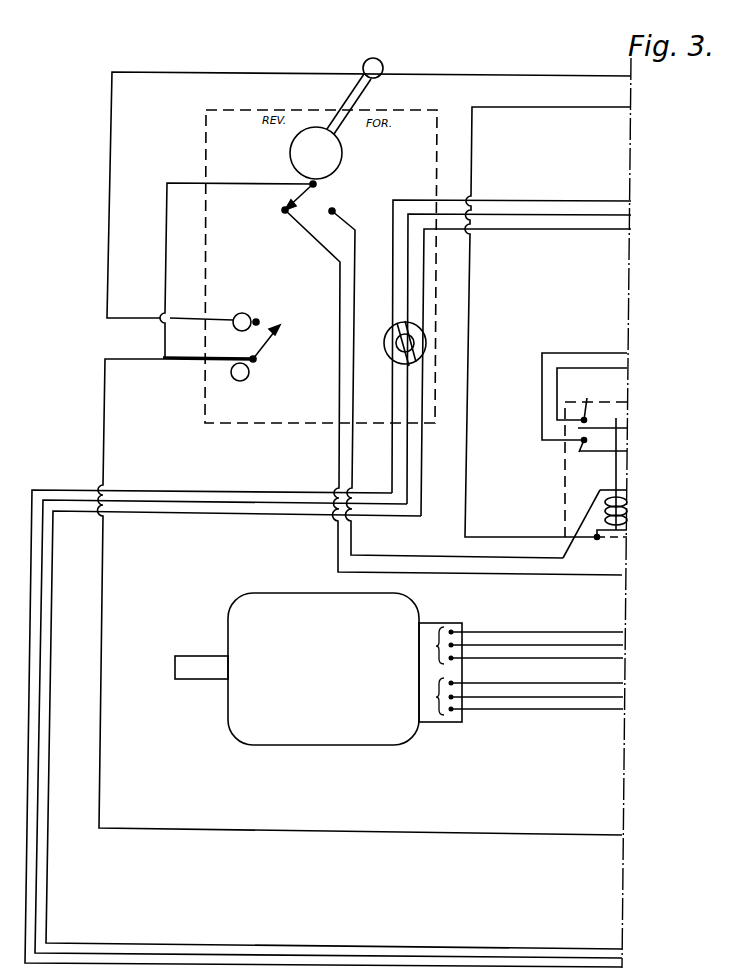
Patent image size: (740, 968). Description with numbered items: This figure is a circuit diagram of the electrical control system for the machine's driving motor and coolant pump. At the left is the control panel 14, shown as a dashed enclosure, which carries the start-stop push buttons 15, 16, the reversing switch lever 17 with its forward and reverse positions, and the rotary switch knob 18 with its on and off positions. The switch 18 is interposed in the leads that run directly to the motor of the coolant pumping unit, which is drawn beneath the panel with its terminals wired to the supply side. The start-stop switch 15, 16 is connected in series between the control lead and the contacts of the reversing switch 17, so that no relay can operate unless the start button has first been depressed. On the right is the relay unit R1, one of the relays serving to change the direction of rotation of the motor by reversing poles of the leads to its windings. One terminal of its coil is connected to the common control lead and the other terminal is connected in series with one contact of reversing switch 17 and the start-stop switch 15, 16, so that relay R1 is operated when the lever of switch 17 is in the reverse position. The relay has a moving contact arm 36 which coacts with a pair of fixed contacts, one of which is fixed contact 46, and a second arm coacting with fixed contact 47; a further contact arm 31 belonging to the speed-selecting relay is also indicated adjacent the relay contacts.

The control panel 14 is at (225, 227).
The start push button 15 is at (233, 319).
The stop push button 16 is at (232, 373).
The reversing switch lever 17 is at (348, 101).
The rotary switch knob 18 is at (418, 338).
The fixed contact 46 is at (589, 399).
The contact arm 36 is at (602, 418).
The contact arm 31 is at (603, 441).
The fixed contact 47 is at (581, 506).
The relay unit R1 is at (554, 455).